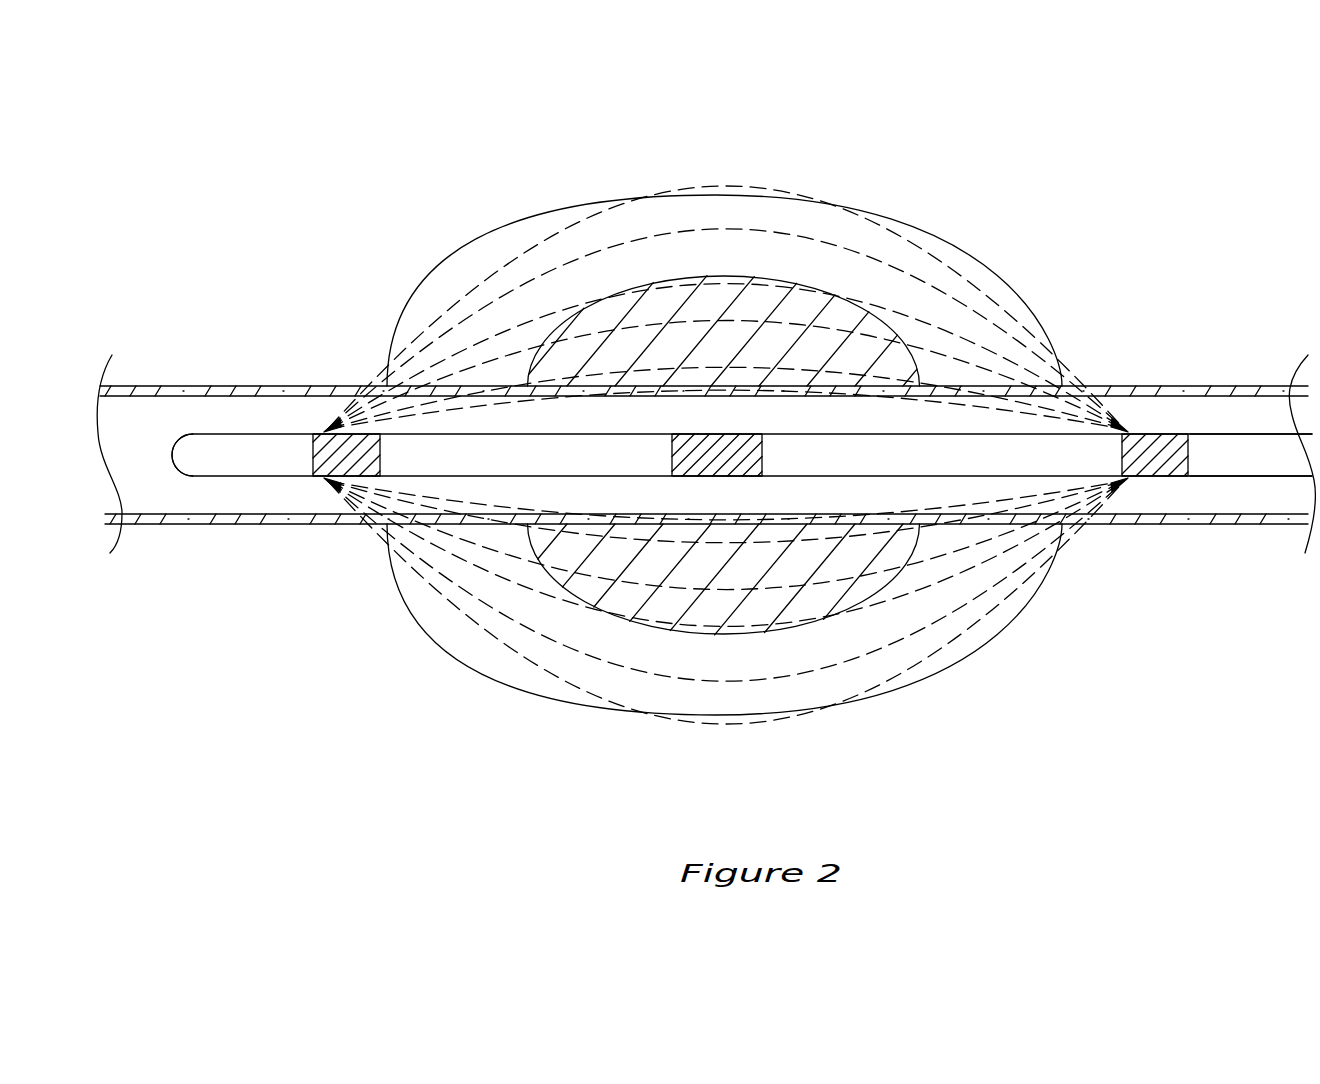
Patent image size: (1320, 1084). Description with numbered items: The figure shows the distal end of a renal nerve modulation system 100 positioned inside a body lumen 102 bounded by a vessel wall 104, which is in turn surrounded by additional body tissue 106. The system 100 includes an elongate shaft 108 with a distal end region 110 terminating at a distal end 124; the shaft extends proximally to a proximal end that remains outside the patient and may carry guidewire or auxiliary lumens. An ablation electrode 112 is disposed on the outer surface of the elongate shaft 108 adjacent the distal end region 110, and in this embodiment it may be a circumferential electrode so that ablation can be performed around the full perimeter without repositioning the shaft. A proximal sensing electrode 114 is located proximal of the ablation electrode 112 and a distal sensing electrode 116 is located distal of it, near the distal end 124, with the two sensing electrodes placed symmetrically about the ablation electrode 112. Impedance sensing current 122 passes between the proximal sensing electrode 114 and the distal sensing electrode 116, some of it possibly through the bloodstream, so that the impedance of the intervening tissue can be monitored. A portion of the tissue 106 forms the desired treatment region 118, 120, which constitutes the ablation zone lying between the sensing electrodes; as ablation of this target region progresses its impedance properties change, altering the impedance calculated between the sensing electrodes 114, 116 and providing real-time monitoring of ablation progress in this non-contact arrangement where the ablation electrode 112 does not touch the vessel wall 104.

The renal nerve modulation system 100 is at (1117, 173).
The body lumen 102 is at (153, 413).
The vessel wall 104 is at (232, 393).
The body tissue 106 is at (292, 209).
The elongate shaft 108 is at (1233, 466).
The distal end region 110 is at (267, 432).
The ablation electrode 112 is at (703, 440).
The proximal sensing electrode 114 is at (1152, 437).
The distal sensing electrode 116 is at (320, 476).
The treatment region 118 is at (848, 318).
The treatment region 120 is at (462, 287).
The impedance sensing current 122 is at (741, 185).
The distal end 124 is at (177, 476).